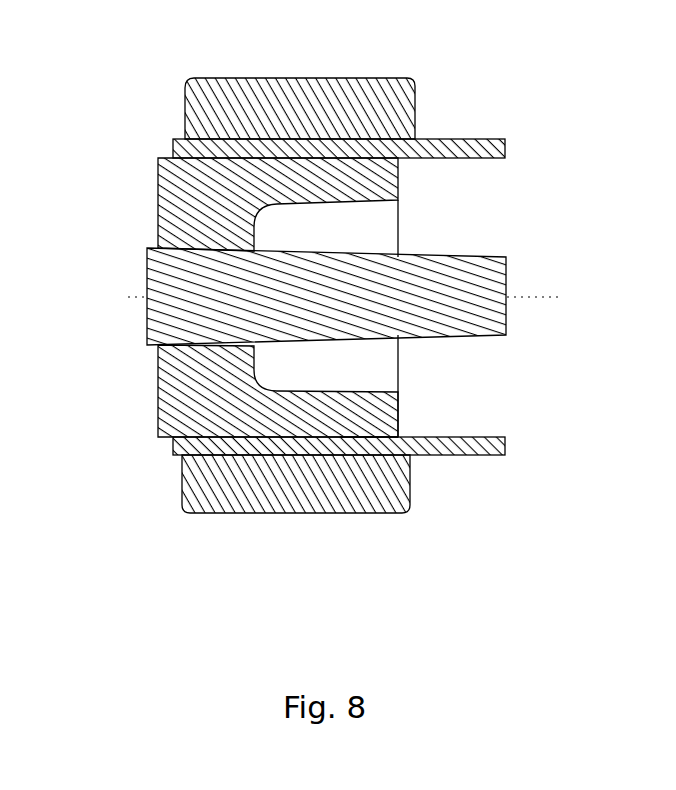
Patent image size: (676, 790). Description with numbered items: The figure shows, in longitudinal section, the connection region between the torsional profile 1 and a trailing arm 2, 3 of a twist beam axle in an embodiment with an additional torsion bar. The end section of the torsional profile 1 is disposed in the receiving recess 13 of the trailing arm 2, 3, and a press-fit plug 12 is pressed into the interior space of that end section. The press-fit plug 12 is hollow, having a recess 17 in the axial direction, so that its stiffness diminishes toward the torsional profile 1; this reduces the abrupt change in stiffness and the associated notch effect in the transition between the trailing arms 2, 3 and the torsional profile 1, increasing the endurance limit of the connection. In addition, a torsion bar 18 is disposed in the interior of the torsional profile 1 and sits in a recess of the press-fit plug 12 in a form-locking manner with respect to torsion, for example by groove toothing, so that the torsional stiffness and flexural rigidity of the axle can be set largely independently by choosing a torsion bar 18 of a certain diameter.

The torsional profile 1 is at (248, 80).
The trailing arm 2 is at (293, 485).
The trailing arm 3 is at (339, 446).
The press-fit plug 12 is at (207, 380).
The receiving recess 13 is at (366, 446).
The recess 17 is at (363, 245).
The torsion bar 18 is at (463, 275).